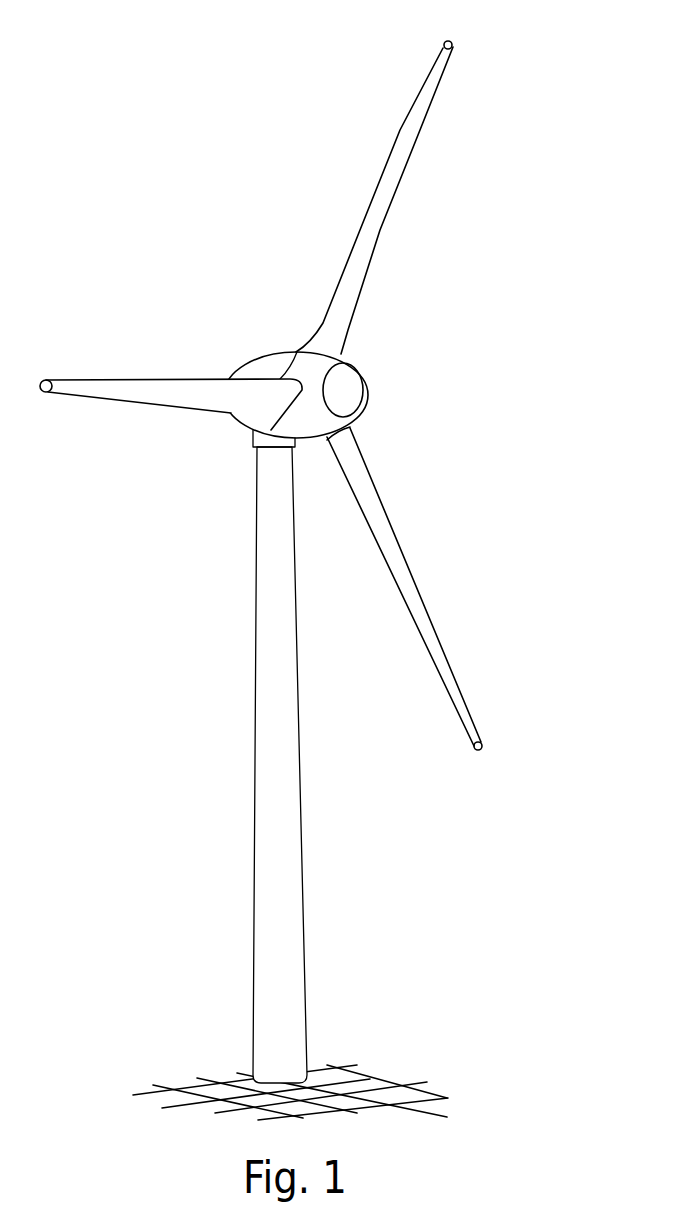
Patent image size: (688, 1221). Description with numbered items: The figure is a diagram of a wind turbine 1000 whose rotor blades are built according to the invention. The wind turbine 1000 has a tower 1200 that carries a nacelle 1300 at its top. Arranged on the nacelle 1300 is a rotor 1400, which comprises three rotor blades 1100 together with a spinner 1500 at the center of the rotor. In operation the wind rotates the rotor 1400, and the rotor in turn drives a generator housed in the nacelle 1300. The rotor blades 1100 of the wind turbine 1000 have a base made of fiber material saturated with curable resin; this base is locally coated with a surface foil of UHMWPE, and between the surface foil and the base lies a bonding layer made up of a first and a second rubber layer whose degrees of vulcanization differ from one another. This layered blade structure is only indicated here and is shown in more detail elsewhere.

The wind turbine 1000 is at (261, 137).
The rotor blades 1100 is at (155, 385).
The tower 1200 is at (268, 847).
The nacelle 1300 is at (262, 370).
The rotor 1400 is at (453, 293).
The spinner 1500 is at (357, 387).